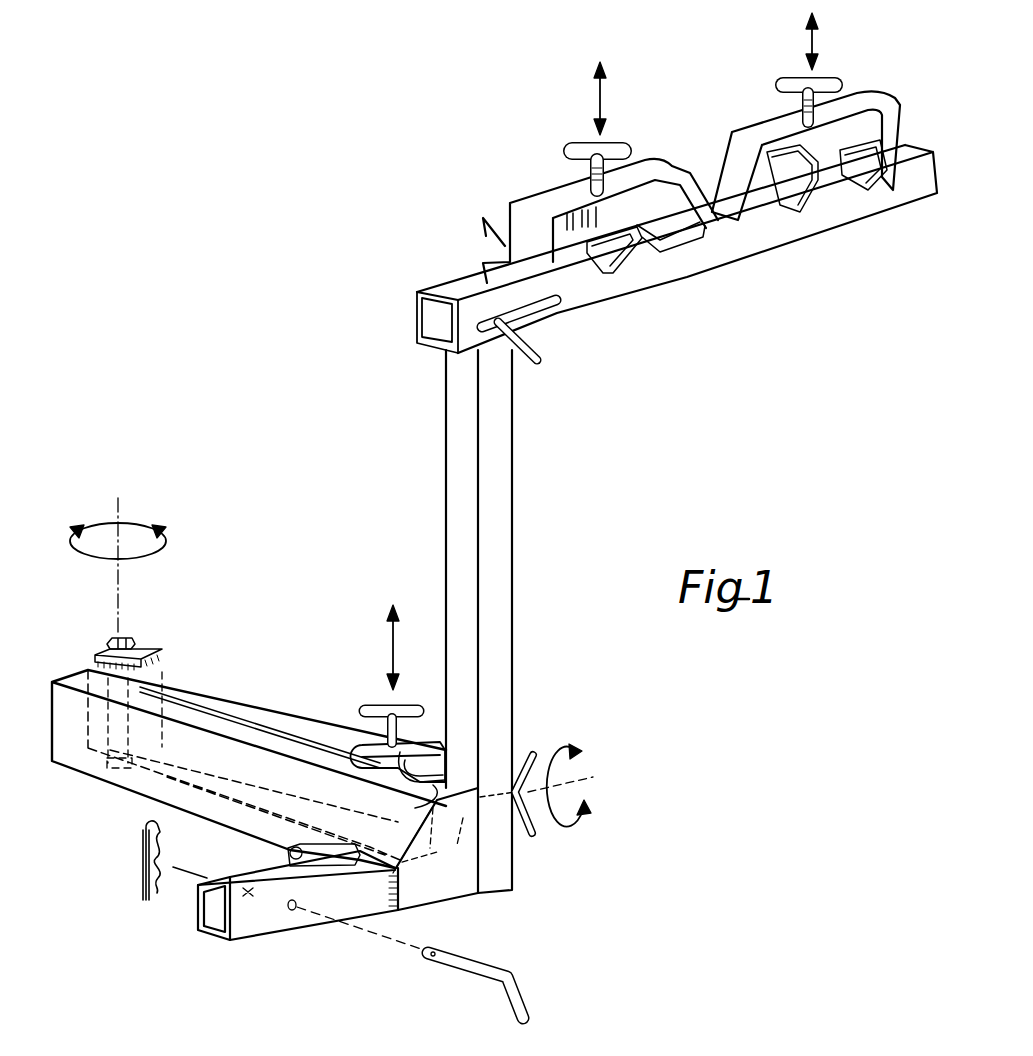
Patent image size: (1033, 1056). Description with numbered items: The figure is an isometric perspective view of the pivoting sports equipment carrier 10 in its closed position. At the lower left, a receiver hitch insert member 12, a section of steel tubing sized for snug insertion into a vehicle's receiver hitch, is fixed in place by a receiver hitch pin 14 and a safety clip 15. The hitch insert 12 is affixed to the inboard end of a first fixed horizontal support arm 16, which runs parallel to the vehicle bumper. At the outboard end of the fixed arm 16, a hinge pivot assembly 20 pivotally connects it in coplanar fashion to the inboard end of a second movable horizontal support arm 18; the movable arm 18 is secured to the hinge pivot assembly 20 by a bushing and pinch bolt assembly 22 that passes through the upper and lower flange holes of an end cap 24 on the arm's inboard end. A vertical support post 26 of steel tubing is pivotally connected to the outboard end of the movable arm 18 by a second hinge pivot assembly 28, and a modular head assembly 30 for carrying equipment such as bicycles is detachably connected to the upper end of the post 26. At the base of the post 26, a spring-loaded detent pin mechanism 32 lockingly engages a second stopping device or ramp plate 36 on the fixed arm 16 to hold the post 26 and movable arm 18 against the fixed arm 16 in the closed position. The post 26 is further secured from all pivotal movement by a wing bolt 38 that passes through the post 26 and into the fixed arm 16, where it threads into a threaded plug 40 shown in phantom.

The pivoting sports equipment carrier 10 is at (302, 448).
The receiver hitch insert member 12 is at (273, 920).
The receiver hitch pin 14 is at (475, 962).
The safety clip 15 is at (142, 857).
The first fixed horizontal support member or arm 16 is at (138, 783).
The second movable horizontal support member or arm 18 is at (248, 703).
The hinge pivot assembly 20 is at (138, 633).
The bushing and pinch bolt assembly 22 is at (108, 639).
The end cap 24 is at (162, 650).
The vertical support member or post 26 is at (505, 518).
The second hinge pivot assembly 28 is at (434, 730).
The modular head assembly 30 is at (685, 140).
The spring-loaded detent pin mechanism 32 is at (373, 695).
The second stopping device or ramp plate 36 is at (420, 798).
The wing bolt 38 is at (538, 830).
The threaded plug 40 is at (433, 849).